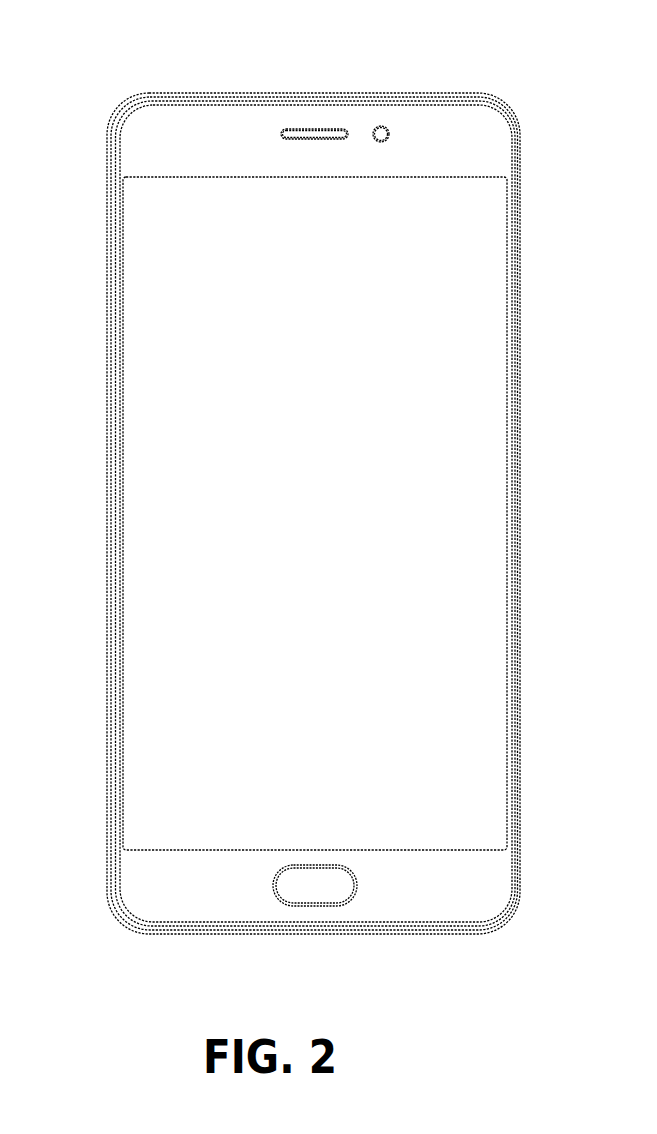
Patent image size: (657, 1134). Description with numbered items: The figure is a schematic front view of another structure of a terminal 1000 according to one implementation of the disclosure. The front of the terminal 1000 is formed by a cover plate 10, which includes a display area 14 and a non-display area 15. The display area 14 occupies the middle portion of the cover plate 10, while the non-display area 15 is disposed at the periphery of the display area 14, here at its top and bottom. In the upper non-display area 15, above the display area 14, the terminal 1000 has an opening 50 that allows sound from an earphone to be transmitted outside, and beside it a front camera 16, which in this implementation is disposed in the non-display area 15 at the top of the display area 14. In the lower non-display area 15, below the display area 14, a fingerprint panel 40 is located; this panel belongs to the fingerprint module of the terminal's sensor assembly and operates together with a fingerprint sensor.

The terminal 1000 is at (133, 66).
The cover plate 10 is at (257, 127).
The display area 14 is at (147, 793).
The non-display area 15 is at (177, 910).
The front camera 16 is at (387, 127).
The fingerprint panel 40 is at (313, 890).
The opening 50 is at (322, 127).